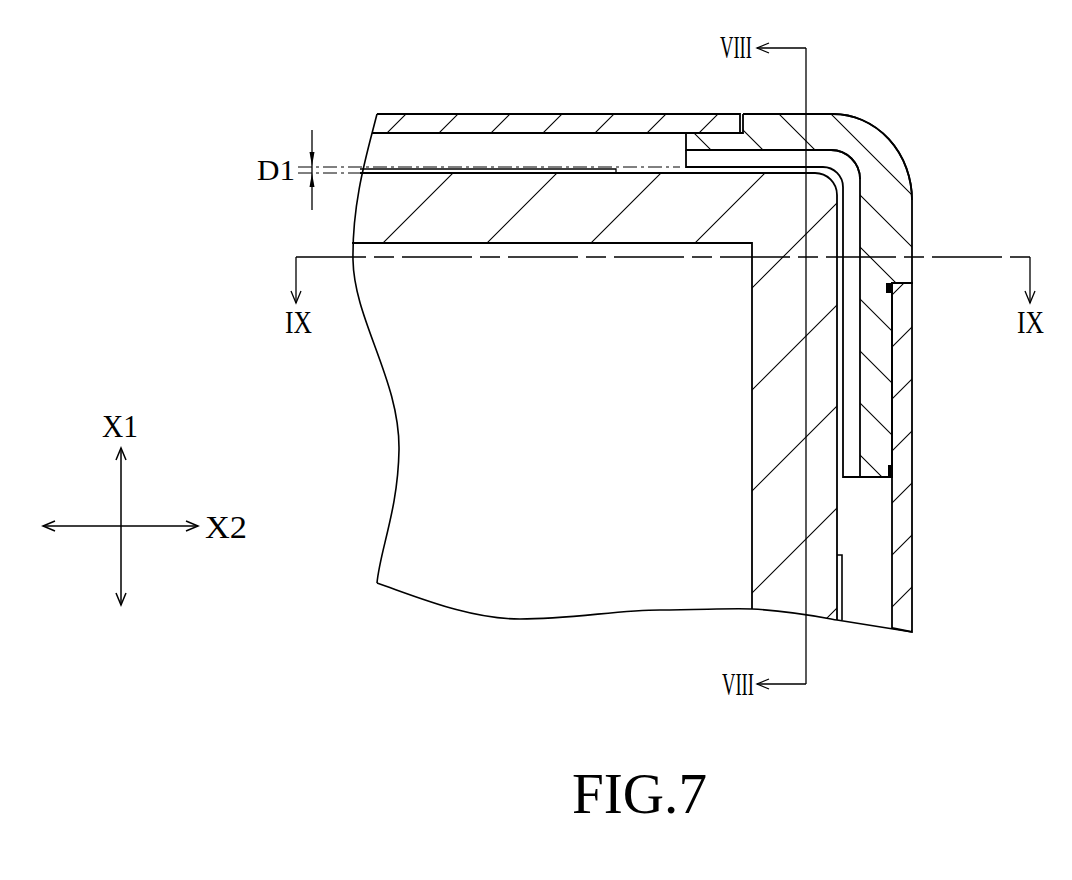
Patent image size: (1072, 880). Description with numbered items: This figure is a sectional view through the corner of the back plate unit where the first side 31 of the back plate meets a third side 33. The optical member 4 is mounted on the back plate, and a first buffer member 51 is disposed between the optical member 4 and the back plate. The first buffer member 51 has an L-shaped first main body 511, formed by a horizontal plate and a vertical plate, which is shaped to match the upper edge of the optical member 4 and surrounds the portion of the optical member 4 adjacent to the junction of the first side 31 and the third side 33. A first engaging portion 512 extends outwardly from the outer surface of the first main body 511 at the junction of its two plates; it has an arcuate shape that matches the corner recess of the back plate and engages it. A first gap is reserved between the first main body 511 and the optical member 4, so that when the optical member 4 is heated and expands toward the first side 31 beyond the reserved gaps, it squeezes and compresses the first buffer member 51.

The first side 31 is at (485, 114).
The optical member 4 is at (392, 213).
The first buffer member 51 is at (900, 163).
The first main body 511 is at (707, 158).
The first engaging portion 512 is at (850, 143).
The third side 33 is at (913, 425).